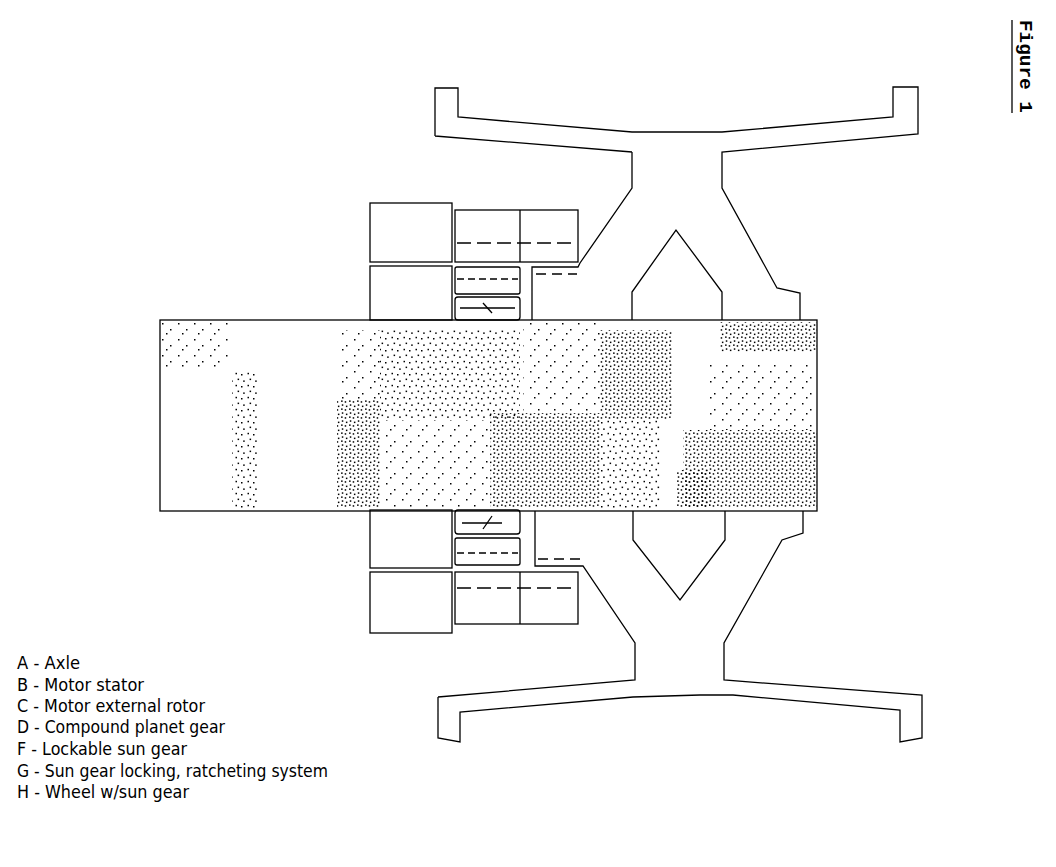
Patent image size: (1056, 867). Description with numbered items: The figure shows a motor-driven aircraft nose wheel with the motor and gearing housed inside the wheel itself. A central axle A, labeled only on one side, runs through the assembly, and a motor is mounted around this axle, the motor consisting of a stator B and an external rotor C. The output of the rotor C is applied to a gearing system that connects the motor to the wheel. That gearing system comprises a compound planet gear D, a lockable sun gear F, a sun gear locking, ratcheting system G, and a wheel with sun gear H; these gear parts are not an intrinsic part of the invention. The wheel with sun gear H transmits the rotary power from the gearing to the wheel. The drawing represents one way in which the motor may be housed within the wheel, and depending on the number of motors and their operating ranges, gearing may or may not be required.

The axle A is at (488, 415).
The motor stator B is at (411, 417).
The motor external rotor C is at (411, 418).
The compound planet gear D is at (516, 417).
The lockable sun gear F is at (487, 416).
The sun gear locking, ratcheting system G is at (487, 416).
The wheel with sun gear H is at (678, 414).